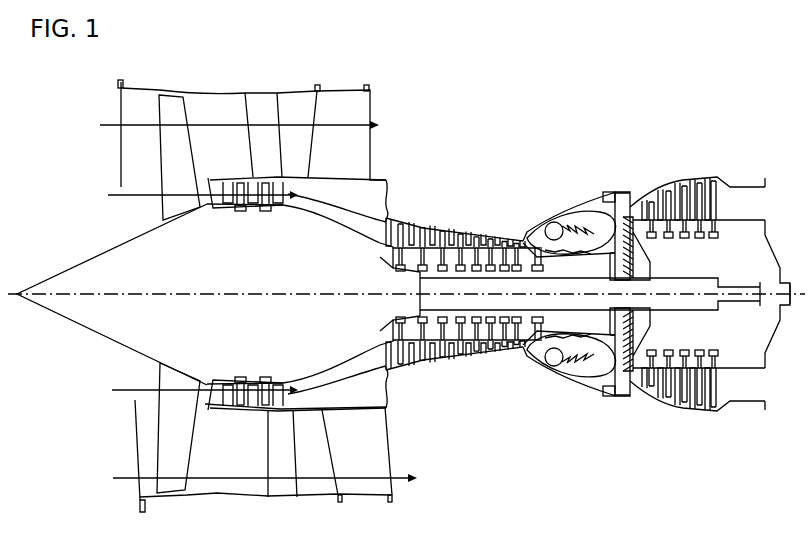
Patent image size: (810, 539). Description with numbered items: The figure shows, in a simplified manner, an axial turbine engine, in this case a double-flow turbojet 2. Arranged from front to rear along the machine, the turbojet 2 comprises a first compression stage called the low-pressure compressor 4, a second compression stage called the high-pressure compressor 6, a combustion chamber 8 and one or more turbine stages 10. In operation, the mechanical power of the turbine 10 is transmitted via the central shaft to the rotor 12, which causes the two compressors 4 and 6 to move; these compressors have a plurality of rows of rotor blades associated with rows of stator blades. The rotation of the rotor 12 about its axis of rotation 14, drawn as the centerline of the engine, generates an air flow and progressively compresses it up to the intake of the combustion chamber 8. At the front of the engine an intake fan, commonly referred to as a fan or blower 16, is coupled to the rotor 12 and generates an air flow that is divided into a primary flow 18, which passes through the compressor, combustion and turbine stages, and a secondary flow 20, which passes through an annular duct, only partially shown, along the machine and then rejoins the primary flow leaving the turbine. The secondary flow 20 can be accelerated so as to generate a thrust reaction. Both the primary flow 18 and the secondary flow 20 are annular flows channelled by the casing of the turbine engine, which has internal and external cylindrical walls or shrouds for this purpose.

The turbojet 2 is at (568, 112).
The low-pressure compressor 4 is at (228, 204).
The high-pressure compressor 6 is at (430, 228).
The combustion chamber 8 is at (557, 225).
The turbine stages 10 is at (693, 202).
The rotor 12 is at (92, 320).
The axis of rotation 14 is at (257, 297).
The fan 16 is at (176, 151).
The primary flow 18 is at (192, 295).
The secondary flow 20 is at (247, 303).